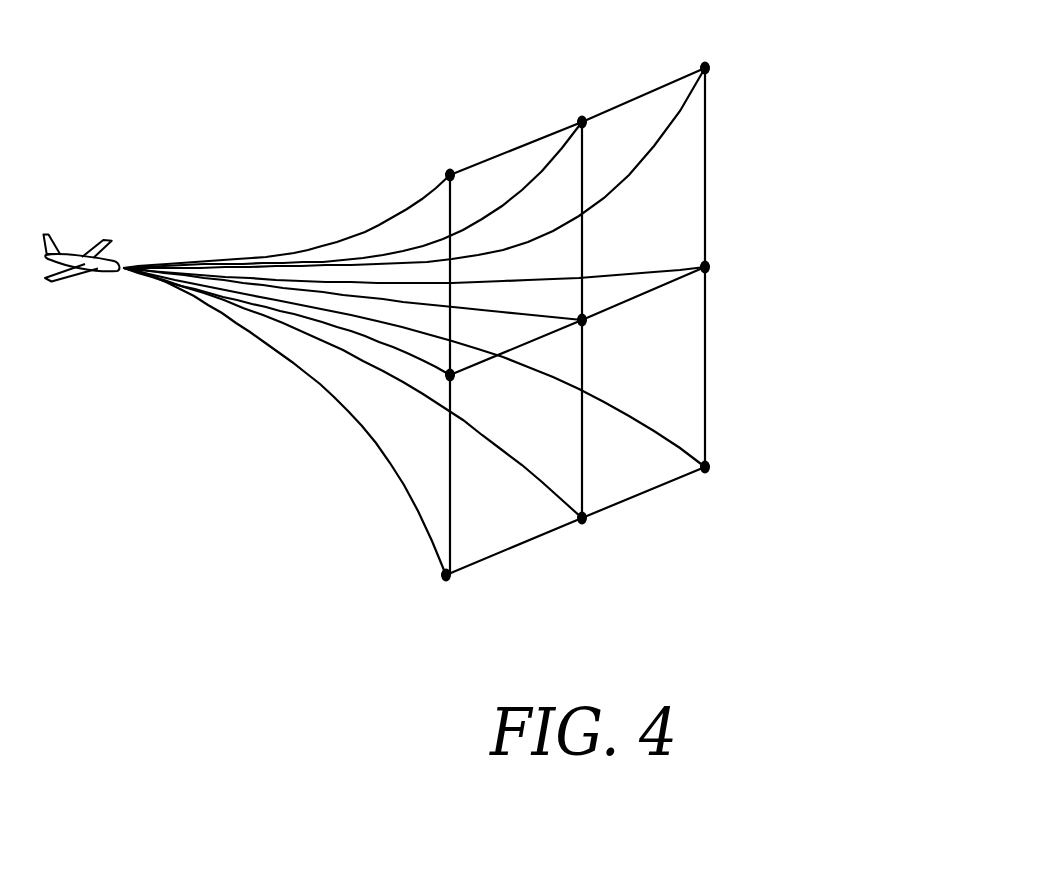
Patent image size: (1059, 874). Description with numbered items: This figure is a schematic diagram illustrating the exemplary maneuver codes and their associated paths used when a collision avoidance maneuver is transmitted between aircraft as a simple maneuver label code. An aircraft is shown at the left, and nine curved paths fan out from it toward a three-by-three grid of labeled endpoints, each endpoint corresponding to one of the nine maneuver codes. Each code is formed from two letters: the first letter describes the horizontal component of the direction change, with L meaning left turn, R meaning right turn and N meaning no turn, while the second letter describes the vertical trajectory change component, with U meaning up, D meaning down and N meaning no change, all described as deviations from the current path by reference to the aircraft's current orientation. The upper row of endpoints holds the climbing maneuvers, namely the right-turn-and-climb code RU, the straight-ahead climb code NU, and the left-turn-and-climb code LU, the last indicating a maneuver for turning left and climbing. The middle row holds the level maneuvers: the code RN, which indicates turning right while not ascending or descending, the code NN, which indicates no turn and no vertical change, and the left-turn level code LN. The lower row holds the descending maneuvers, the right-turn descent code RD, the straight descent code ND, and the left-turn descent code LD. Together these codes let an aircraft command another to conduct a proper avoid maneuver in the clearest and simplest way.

The maneuver code LU is at (724, 51).
The maneuver code NU is at (583, 100).
The maneuver code RU is at (456, 142).
The maneuver code LN is at (735, 285).
The maneuver code NN is at (611, 339).
The maneuver code RN is at (474, 389).
The maneuver code LD is at (718, 490).
The maneuver code ND is at (598, 544).
The maneuver code RD is at (456, 599).